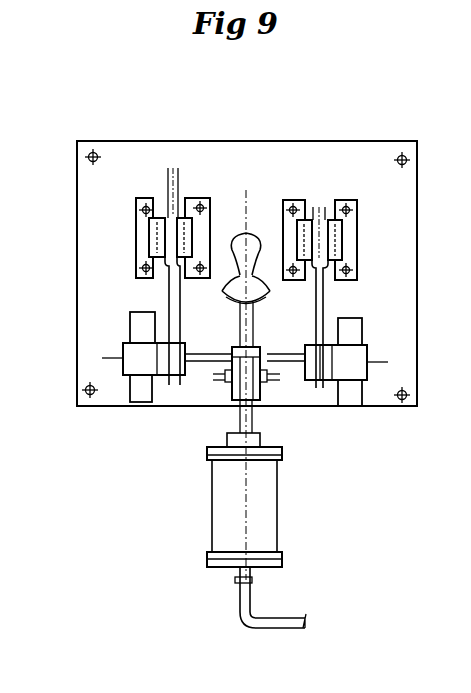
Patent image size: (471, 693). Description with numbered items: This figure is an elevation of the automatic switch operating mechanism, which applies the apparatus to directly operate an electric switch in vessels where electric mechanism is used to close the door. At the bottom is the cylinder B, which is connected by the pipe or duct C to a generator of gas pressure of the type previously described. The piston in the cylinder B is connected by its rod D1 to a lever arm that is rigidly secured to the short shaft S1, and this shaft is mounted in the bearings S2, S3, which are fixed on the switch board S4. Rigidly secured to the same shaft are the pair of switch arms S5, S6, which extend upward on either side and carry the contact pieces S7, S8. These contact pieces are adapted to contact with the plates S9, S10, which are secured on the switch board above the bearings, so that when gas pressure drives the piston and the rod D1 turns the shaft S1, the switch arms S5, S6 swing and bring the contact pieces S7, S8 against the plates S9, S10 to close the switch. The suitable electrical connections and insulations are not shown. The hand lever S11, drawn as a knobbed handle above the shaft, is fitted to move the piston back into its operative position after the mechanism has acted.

The short shaft S1 is at (245, 390).
The bearing S2 is at (76, 355).
The bearing S3 is at (358, 352).
The switch board S4 is at (87, 223).
The switch arm S5 is at (168, 297).
The switch arm S6 is at (325, 298).
The contact piece S7 is at (148, 238).
The contact piece S8 is at (340, 240).
The plate S9 is at (190, 198).
The plate S10 is at (302, 200).
The hand lever S11 is at (242, 325).
The piston rod D1 is at (252, 428).
The cylinder B is at (263, 520).
The pipe or duct C is at (243, 606).